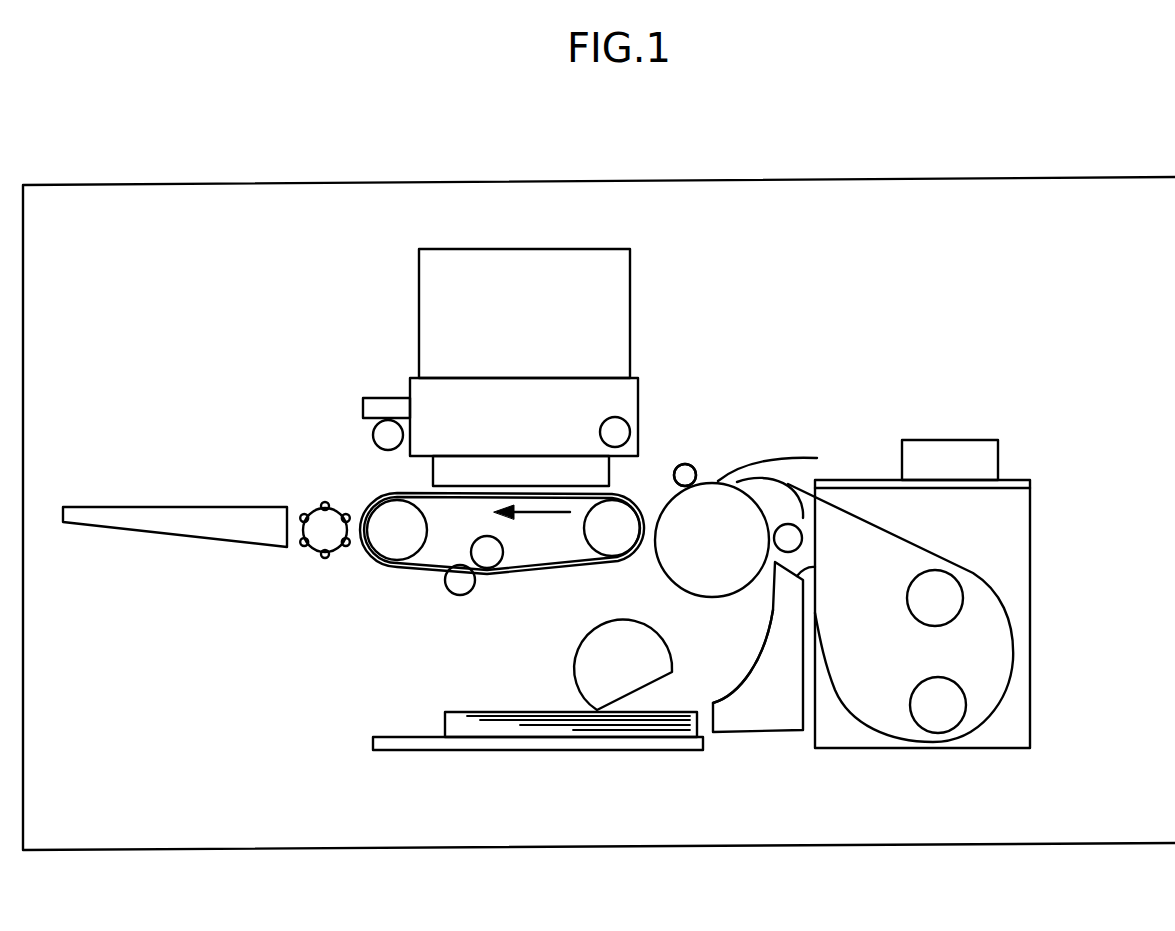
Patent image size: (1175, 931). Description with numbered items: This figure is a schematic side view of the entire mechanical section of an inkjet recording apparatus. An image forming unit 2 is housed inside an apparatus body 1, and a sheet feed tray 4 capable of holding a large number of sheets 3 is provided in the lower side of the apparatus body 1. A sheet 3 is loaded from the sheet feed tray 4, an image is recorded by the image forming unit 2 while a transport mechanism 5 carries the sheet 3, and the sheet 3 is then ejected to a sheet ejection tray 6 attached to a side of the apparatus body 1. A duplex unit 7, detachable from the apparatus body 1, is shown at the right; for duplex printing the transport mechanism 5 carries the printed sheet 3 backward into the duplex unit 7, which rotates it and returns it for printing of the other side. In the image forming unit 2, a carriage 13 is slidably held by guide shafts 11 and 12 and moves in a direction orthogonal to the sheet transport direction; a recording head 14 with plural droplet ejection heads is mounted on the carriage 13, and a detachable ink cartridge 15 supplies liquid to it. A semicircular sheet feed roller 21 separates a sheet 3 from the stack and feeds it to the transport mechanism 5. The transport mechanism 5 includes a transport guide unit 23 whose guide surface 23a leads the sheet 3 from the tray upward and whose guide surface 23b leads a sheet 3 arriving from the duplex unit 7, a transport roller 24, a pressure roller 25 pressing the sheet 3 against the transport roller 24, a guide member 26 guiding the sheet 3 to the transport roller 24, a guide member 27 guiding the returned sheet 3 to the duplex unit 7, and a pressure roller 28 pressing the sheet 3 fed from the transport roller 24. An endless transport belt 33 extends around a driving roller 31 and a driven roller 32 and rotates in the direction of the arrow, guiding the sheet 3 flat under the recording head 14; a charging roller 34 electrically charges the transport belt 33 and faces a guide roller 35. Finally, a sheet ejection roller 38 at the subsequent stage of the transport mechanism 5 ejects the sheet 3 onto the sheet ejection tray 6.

The apparatus body 1 is at (188, 183).
The image forming unit 2 is at (360, 290).
The sheet 3 is at (457, 713).
The sheet feed tray 4 is at (517, 750).
The transport mechanism 5 is at (518, 587).
The sheet ejection tray 6 is at (230, 518).
The duplex unit 7 is at (1020, 458).
The guide shaft 11 is at (630, 433).
The guide shaft 12 is at (375, 448).
The carriage 13 is at (413, 390).
The recording head 14 is at (433, 463).
The ink cartridge 15 is at (622, 313).
The sheet feed roller 21 is at (577, 652).
The transport guide unit 23 is at (762, 733).
The guide surface 23a is at (767, 637).
The guide surface 23b is at (817, 568).
The transport roller 24 is at (690, 583).
The pressure roller 25 is at (803, 543).
The guide member 26 is at (782, 487).
The guide member 27 is at (777, 455).
The pressure roller 28 is at (690, 472).
The driving roller 31 is at (627, 510).
The driven roller 32 is at (373, 550).
The transport belt 33 is at (557, 497).
The charging roller 34 is at (453, 587).
The guide roller 35 is at (481, 543).
The sheet ejection roller 38 is at (317, 548).